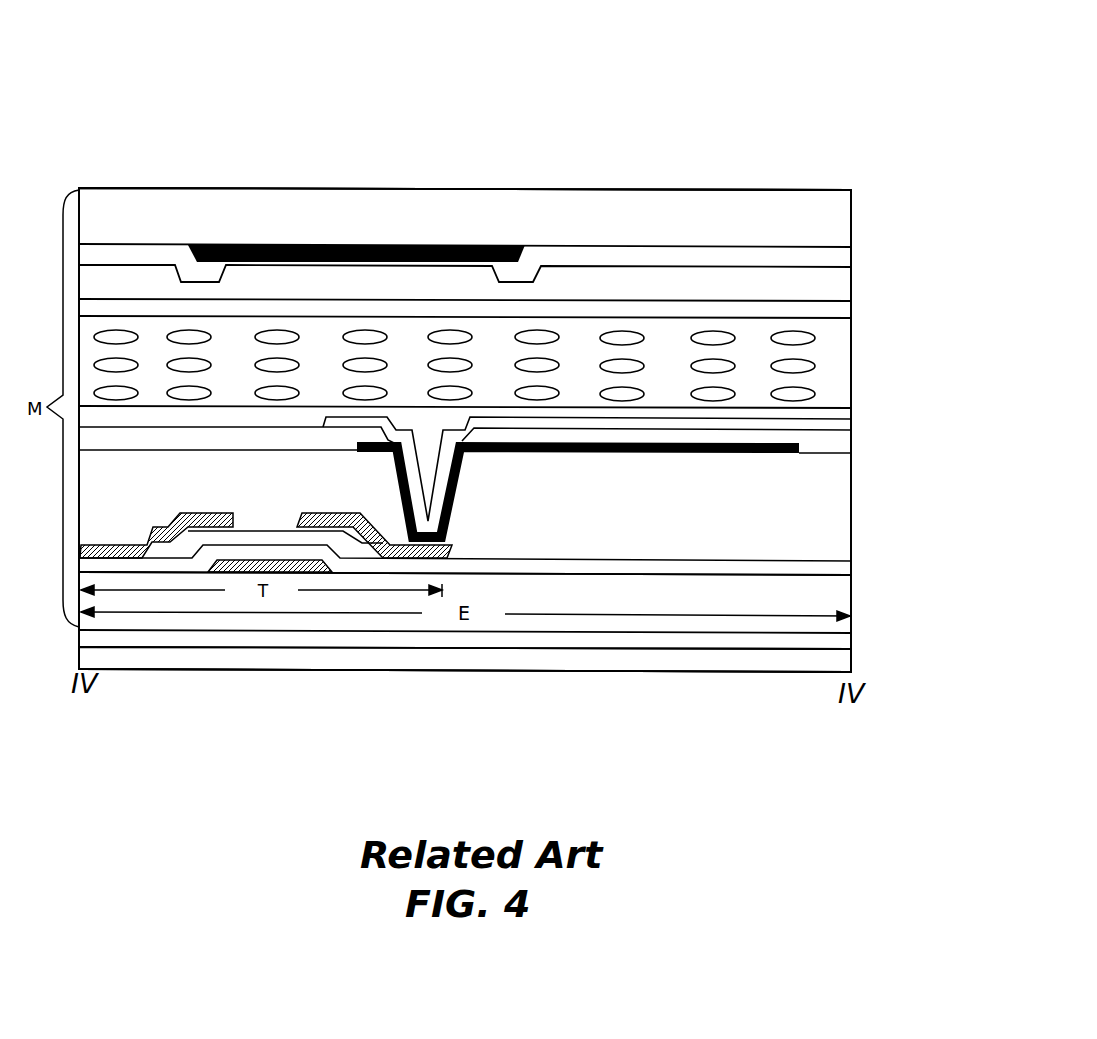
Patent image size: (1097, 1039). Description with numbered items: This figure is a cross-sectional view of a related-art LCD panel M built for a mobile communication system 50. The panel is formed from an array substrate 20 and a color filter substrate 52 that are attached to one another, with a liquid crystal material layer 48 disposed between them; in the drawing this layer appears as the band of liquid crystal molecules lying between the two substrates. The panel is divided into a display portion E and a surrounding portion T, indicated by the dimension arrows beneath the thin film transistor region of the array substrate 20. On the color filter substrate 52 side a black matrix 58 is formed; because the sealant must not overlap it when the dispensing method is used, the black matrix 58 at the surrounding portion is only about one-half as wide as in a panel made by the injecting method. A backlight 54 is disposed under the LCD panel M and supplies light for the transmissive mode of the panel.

The mobile communication system 50 is at (680, 119).
The color filter substrate 52 is at (427, 233).
The black matrix 58 is at (488, 246).
The liquid crystal material layer 48 is at (276, 336).
The array substrate 20 is at (575, 604).
The backlight 54 is at (307, 657).